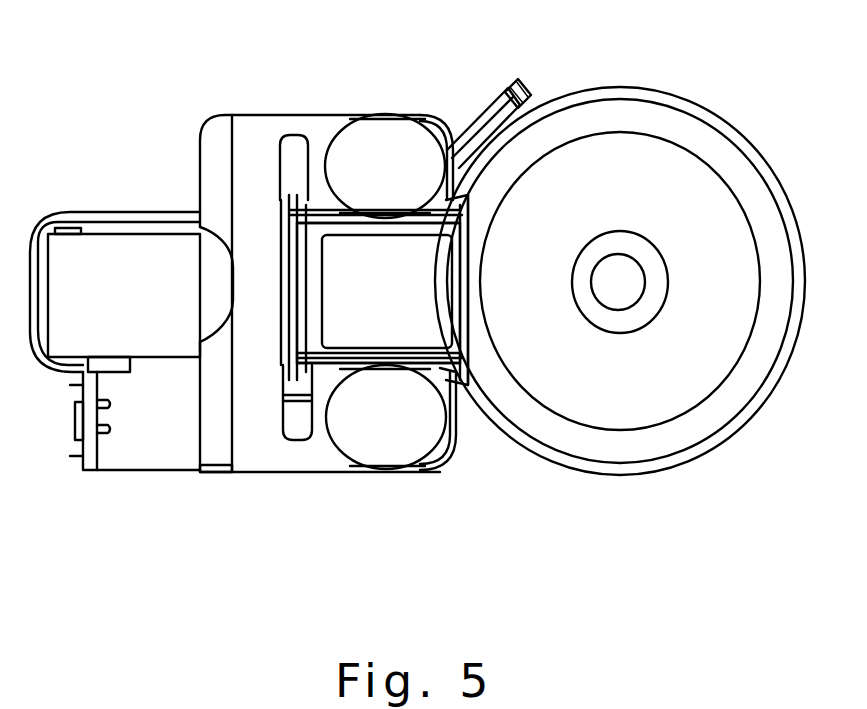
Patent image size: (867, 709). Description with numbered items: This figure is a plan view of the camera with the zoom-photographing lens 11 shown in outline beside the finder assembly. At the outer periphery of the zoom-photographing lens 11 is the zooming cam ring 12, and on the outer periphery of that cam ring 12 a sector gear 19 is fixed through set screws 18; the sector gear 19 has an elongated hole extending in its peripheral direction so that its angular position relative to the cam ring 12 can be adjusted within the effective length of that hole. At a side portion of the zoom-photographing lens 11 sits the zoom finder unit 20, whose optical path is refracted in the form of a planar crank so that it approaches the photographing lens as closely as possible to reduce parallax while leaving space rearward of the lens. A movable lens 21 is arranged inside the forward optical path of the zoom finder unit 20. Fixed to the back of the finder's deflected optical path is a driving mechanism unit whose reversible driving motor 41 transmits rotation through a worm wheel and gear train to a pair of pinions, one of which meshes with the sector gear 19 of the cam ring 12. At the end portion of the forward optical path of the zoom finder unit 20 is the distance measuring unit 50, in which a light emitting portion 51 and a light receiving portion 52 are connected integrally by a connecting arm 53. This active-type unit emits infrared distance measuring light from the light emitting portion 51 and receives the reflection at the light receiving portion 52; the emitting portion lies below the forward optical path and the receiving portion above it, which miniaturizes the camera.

The zoom-photographing lens 11 is at (718, 353).
The zooming cam ring 12 is at (787, 203).
The set screws 18 is at (481, 116).
The sector gear 19 is at (506, 94).
The zoom finder unit 20 is at (110, 210).
The movable lens 21 is at (440, 261).
The reversible driving motor 41 is at (147, 455).
The distance measuring unit 50 is at (437, 107).
The light emitting portion 51 is at (392, 450).
The light receiving portion 52 is at (386, 130).
The connecting arm 53 is at (258, 350).